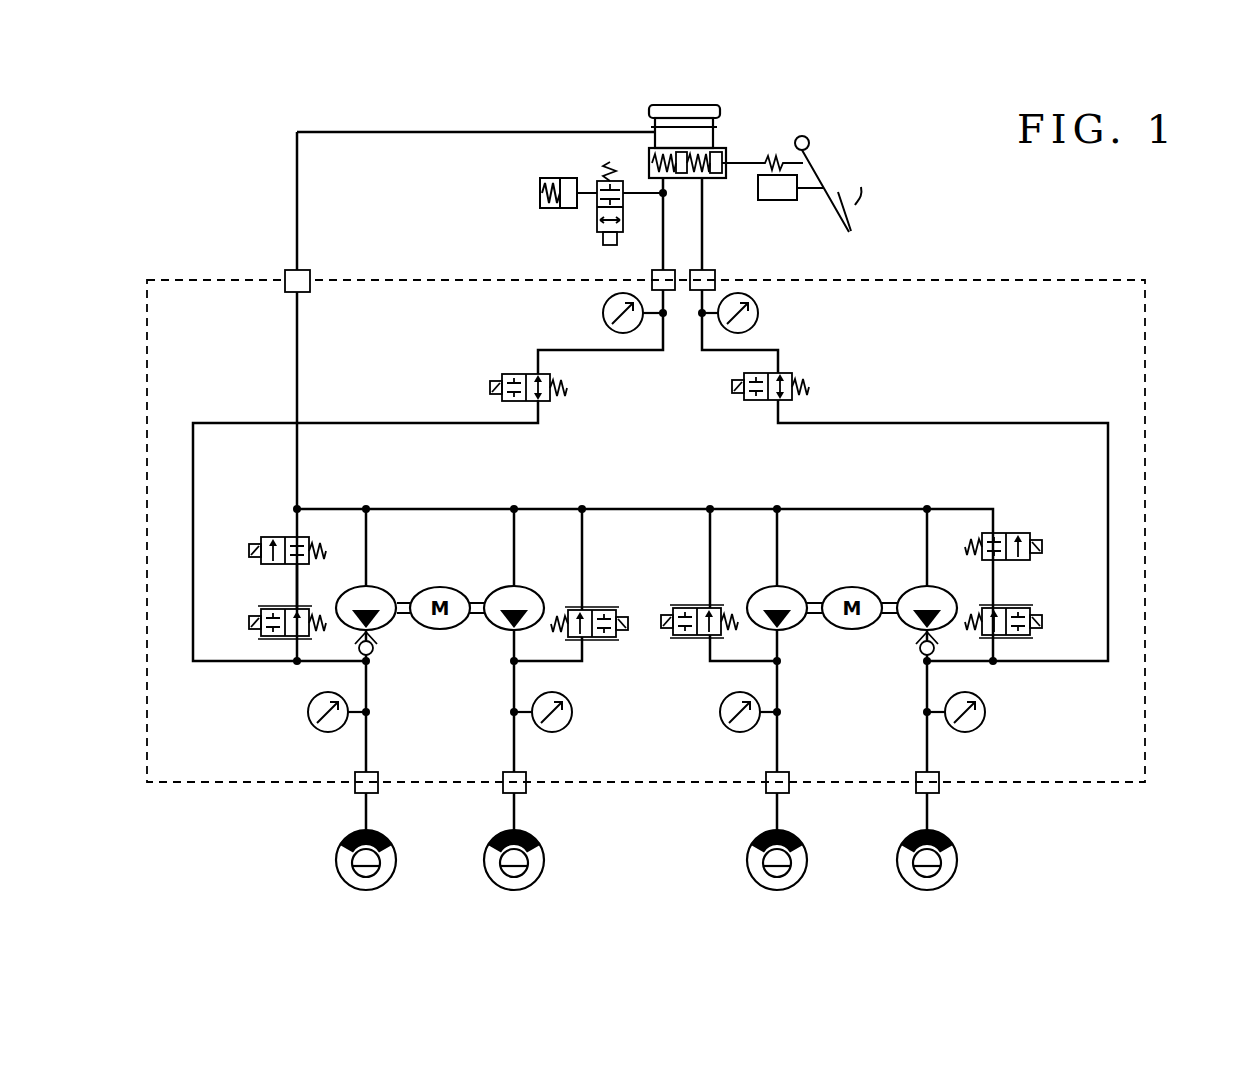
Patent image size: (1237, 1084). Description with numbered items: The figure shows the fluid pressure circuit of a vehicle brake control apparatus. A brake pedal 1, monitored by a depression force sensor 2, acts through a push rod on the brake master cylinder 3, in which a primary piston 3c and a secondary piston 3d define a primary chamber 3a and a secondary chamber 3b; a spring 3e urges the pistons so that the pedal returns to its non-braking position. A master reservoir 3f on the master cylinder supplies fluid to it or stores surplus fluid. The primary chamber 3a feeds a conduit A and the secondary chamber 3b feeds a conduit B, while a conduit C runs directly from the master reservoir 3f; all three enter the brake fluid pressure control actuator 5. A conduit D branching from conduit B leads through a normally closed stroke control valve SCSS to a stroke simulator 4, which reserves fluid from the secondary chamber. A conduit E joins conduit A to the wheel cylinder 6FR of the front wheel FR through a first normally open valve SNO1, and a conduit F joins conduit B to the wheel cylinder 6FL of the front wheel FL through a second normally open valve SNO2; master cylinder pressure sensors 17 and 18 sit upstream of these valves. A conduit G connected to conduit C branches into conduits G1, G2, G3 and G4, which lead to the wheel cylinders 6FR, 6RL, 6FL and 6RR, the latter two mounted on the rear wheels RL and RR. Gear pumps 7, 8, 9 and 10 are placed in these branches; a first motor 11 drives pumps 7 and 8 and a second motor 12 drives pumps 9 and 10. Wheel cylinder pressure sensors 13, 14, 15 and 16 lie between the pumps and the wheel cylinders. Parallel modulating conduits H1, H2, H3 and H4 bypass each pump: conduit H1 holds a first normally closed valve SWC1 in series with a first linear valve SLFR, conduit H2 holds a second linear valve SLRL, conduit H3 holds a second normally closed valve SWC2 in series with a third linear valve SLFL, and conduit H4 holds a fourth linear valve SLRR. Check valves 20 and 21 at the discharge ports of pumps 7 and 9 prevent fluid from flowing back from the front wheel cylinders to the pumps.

The brake pedal 1 is at (856, 190).
The depression force sensor 2 is at (793, 200).
The brake master cylinder 3 is at (719, 148).
The primary chamber 3a is at (708, 165).
The secondary chamber 3b is at (667, 178).
The primary piston 3c is at (727, 160).
The secondary piston 3d is at (650, 150).
The spring 3e is at (702, 178).
The master reservoir 3f is at (655, 107).
The stroke simulator 4 is at (540, 191).
The brake fluid pressure control actuator 5 is at (1146, 293).
The wheel cylinder 6FL is at (372, 836).
The wheel cylinder 6RR is at (520, 836).
The wheel cylinder 6RL is at (783, 836).
The wheel cylinder 6FR is at (933, 836).
The first pump 7 is at (912, 632).
The second pump 8 is at (792, 632).
The third pump 9 is at (386, 632).
The fourth pump 10 is at (492, 632).
The first motor 11 is at (851, 632).
The second motor 12 is at (438, 632).
The first pressure sensor 13 is at (968, 732).
The second pressure sensor 14 is at (738, 732).
The third pressure sensor 15 is at (325, 732).
The fourth pressure sensor 16 is at (554, 732).
The M/C pressure sensor 17 is at (758, 314).
The M/C pressure sensor 18 is at (603, 314).
The check valve 20 is at (936, 645).
The check valve 21 is at (357, 645).
The conduit A is at (715, 268).
The conduit B is at (652, 268).
The conduit C is at (413, 132).
The conduit D is at (653, 194).
The conduit E is at (1045, 423).
The conduit F is at (363, 423).
The conduit G is at (297, 336).
The first conduit G1 is at (926, 537).
The second conduit G2 is at (780, 537).
The third conduit G3 is at (368, 538).
The fourth conduit G4 is at (512, 538).
The conduit H1 is at (940, 509).
The conduit H2 is at (714, 537).
The conduit H3 is at (299, 576).
The conduit H4 is at (580, 538).
The stroke control valve SCSS is at (597, 225).
The first normally open valve SNO1 is at (796, 373).
The second normally open valve SNO2 is at (502, 374).
The first normally closed valve SWC1 is at (1024, 533).
The second normally closed valve SWC2 is at (266, 537).
The third linear valve SLFL is at (297, 606).
The first linear valve SLFR is at (1008, 607).
The second linear valve SLRL is at (690, 608).
The fourth linear valve SLRR is at (584, 610).
The front wheel FL is at (397, 862).
The front wheel FR is at (958, 862).
The rear wheel RL is at (808, 862).
The rear wheel RR is at (545, 862).